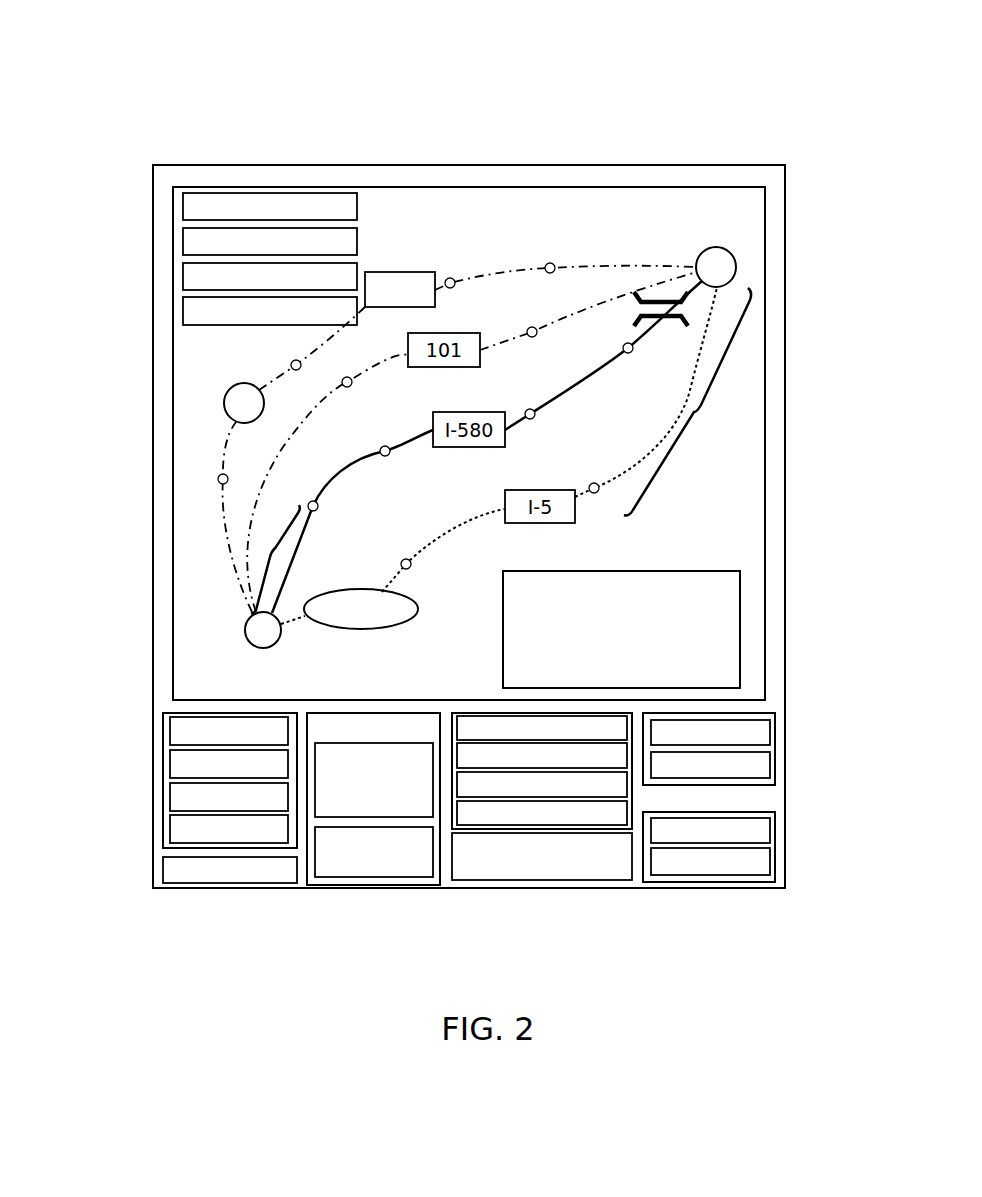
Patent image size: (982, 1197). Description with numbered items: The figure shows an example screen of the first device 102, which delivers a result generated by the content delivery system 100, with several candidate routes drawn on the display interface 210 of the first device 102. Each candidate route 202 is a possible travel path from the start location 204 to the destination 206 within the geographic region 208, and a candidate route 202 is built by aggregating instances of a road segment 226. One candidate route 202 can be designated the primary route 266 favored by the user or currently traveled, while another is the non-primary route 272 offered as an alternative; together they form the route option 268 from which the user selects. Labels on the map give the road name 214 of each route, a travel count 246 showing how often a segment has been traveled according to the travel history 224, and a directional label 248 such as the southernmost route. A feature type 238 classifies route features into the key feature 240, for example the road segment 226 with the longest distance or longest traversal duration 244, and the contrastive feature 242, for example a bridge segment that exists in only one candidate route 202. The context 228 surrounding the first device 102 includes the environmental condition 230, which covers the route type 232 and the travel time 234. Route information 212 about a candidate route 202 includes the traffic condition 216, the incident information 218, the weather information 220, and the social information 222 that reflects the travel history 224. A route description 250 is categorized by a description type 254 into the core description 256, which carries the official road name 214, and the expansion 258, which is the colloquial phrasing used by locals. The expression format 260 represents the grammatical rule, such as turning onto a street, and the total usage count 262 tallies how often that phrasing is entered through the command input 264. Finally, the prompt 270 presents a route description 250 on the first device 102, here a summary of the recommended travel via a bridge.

The content delivery system 100 is at (180, 77).
The first device 102 is at (272, 163).
The display interface 210 is at (217, 185).
The context 228 is at (183, 203).
The travel time 234 is at (183, 240).
The traversal duration 244 is at (183, 275).
The total usage count 262 is at (186, 306).
The expression format 260 is at (296, 328).
The road name 214 is at (400, 272).
The travel count 246 is at (224, 401).
The candidate route 202 is at (602, 268).
The geographic region 208 is at (530, 228).
The primary route 266 is at (513, 333).
The non-primary route 272 is at (577, 390).
The directional label 248 is at (360, 629).
The start location 204 is at (246, 622).
The destination 206 is at (716, 267).
The road segment 226 is at (268, 549).
The key feature 240 is at (697, 410).
The contrastive feature 242 is at (662, 293).
The prompt 270 is at (742, 618).
The traffic condition 216 is at (165, 714).
The incident information 218 is at (168, 749).
The route information 212 is at (167, 782).
The weather information 220 is at (167, 797).
The social information 222 is at (167, 830).
The travel history 224 is at (161, 870).
The route description 250 is at (370, 884).
The description type 254 is at (318, 731).
The core description 256 is at (315, 780).
The expansion 258 is at (433, 852).
The route option 268 is at (632, 772).
The command input 264 is at (547, 880).
The environmental condition 230 is at (778, 739).
The route type 232 is at (772, 728).
The feature type 238 is at (778, 838).